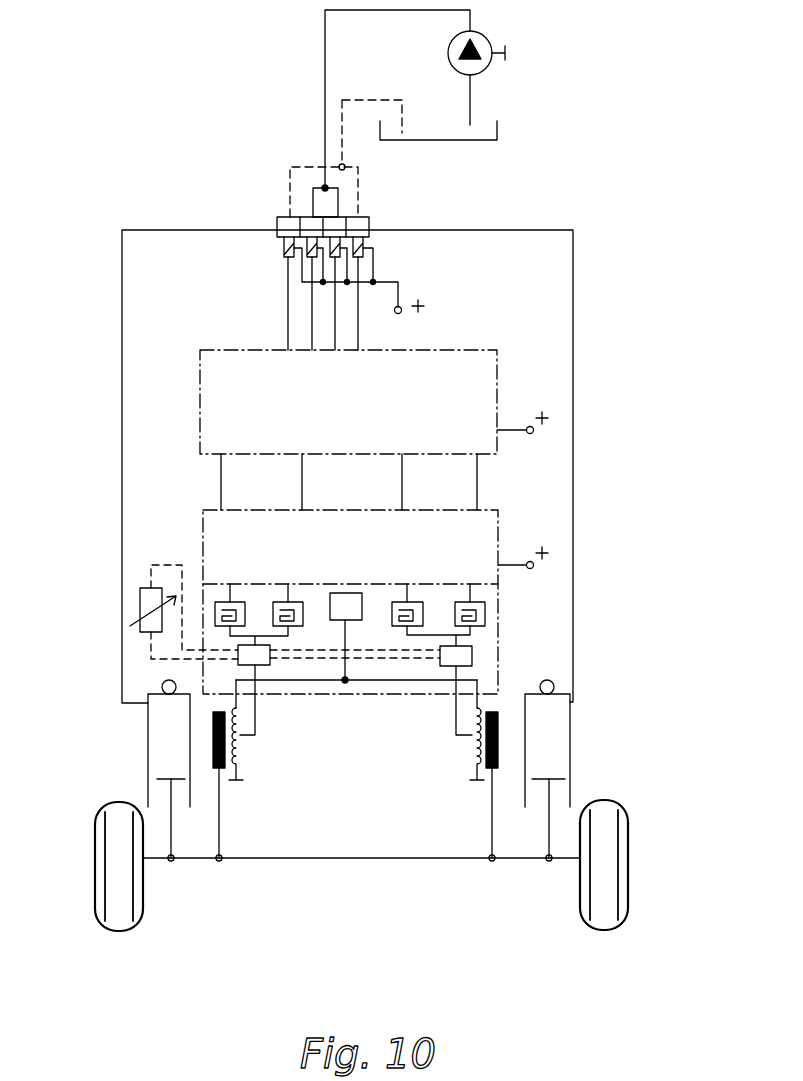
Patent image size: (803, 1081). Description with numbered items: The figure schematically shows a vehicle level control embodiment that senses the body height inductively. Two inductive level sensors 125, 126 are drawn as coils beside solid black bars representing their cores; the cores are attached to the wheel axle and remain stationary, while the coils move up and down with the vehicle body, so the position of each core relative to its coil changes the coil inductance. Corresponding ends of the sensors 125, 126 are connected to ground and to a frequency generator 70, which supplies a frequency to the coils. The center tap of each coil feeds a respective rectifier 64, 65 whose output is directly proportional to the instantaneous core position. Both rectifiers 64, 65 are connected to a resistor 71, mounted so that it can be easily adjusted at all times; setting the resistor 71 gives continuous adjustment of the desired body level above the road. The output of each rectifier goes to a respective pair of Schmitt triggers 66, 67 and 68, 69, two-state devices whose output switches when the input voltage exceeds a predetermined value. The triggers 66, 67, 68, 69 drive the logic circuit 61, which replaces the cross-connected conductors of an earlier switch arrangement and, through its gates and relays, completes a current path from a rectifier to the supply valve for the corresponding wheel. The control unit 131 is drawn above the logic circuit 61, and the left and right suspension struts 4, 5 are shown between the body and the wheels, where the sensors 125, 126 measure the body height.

The control unit 131 is at (432, 351).
The logic circuit 61 is at (487, 523).
The frequency generator 70 is at (345, 609).
The resistor 71 is at (145, 598).
The Schmitt trigger 66 is at (232, 603).
The Schmitt trigger 67 is at (290, 603).
The Schmitt trigger 68 is at (410, 603).
The Schmitt trigger 69 is at (473, 603).
The rectifier 64 is at (262, 662).
The rectifier 65 is at (447, 656).
The left shock absorber / suspension strut 4 is at (165, 729).
The right shock absorber / suspension strut 5 is at (558, 745).
The inductive level sensor 125 is at (238, 757).
The inductive level sensor 126 is at (470, 740).